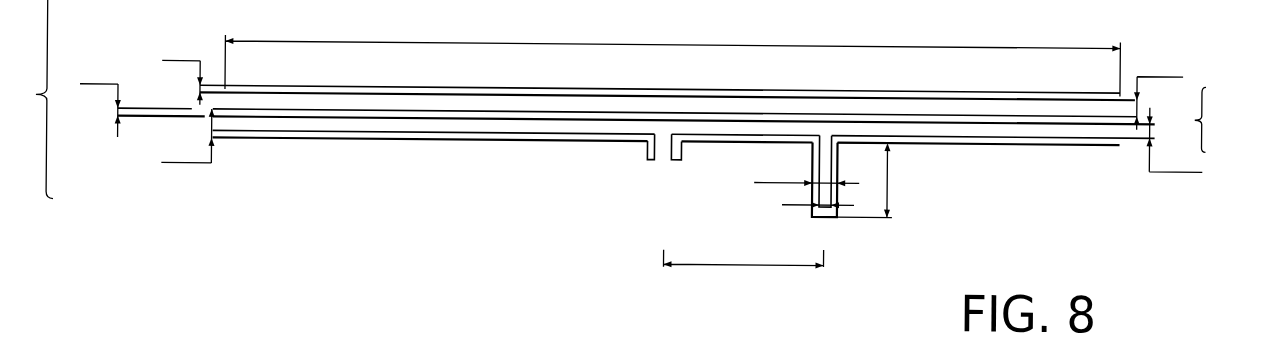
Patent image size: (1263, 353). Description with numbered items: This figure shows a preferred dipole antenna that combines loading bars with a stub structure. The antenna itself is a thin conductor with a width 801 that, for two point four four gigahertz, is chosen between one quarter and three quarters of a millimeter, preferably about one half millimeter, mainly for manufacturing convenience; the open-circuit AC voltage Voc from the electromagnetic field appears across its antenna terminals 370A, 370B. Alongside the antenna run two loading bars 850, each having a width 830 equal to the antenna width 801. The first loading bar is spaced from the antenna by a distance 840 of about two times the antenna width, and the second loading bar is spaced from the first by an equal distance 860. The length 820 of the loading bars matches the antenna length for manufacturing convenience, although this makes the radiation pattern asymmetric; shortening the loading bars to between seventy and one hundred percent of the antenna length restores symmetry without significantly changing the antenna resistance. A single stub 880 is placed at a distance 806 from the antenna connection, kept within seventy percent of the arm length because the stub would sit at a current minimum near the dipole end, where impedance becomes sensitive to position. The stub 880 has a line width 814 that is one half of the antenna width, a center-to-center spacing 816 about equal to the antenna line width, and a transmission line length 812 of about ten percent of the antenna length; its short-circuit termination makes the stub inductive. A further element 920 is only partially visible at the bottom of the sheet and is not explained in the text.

The loading bar length 820 is at (684, 40).
The loading bar width 830 is at (190, 61).
The antenna width 801 is at (190, 163).
The loading bar spacing 860 is at (1160, 69).
The antenna-to-loading-bar distance 840 is at (1175, 164).
The loading bars 850 is at (1207, 112).
The antenna terminal 370A is at (651, 159).
The antenna terminal 370B is at (676, 161).
The stub 880 is at (823, 215).
The center-to-center spacing 816 is at (772, 178).
The stub line width 814 is at (795, 205).
The transmission line length 812 is at (892, 182).
The stub distance 806 is at (710, 259).
The lower element (partially shown) 920 is at (677, 348).